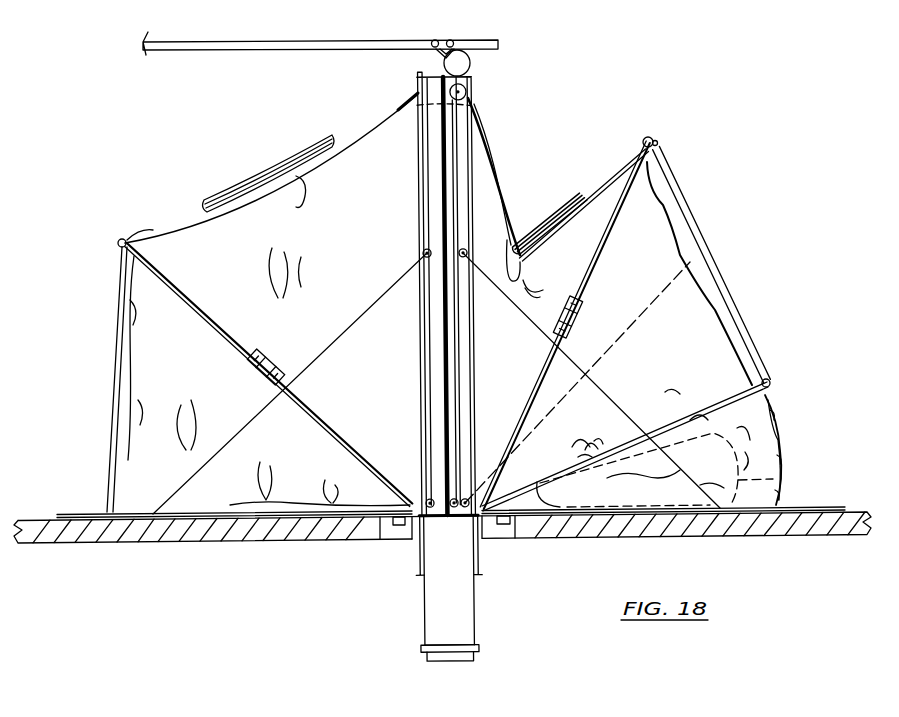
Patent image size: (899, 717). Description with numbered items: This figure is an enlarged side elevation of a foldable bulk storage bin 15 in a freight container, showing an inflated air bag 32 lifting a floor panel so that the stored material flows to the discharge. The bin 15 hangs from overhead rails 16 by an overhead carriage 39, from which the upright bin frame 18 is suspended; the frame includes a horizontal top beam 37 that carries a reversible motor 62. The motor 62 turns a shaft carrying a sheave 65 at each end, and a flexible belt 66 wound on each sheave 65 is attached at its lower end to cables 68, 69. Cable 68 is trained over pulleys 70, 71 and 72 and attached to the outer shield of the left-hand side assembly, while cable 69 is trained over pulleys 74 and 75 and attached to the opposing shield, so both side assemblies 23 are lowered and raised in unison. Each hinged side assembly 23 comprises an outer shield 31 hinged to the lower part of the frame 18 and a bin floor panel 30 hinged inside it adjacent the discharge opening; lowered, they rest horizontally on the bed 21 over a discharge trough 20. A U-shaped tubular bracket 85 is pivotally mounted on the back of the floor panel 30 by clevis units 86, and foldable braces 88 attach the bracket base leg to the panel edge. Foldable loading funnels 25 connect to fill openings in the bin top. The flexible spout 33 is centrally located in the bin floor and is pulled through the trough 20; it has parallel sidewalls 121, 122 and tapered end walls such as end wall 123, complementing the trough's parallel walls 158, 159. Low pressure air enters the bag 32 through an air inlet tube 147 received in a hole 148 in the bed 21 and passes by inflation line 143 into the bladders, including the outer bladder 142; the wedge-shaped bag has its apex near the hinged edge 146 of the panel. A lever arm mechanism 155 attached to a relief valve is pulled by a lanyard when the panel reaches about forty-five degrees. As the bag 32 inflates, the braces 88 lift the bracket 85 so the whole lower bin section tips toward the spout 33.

The foldable bulk storage bin 15 is at (700, 193).
The rails 16 is at (362, 41).
The upright bin frame 18 is at (486, 88).
The discharge trough 20 is at (480, 552).
The bed 21 is at (752, 540).
The hinged side assembly 23 is at (70, 512).
The foldable loading funnel 25 is at (272, 178).
The bin floor panel 30 is at (826, 507).
The outer shield 31 is at (710, 402).
The inflatable air bag 32 is at (788, 419).
The flexible spout 33 is at (488, 631).
The horizontal top beam 37 is at (420, 91).
The overhead carriage 39 is at (470, 33).
The reversible motor 62 is at (471, 63).
The sheave 65 is at (468, 96).
The flexible belt 66 is at (455, 185).
The cable 68 is at (388, 278).
The cable 69 is at (611, 393).
The pulley 70 is at (454, 508).
The pulley 71 is at (427, 497).
The pulley 72 is at (425, 248).
The pulley 74 is at (465, 500).
The pulley 75 is at (467, 250).
The U-shaped tubular bracket 85 is at (196, 294).
The clevis unit 86 is at (242, 343).
The foldable brace 88 is at (109, 351).
The spout sidewall 121 is at (421, 631).
The spout sidewall 122 is at (471, 614).
The tapered end wall 123 is at (444, 603).
The outer bladder 142 is at (782, 451).
The inflation line 143 is at (766, 478).
The hinged edge 146 is at (559, 449).
The air inlet tube 147 is at (398, 527).
The hole 148 is at (520, 524).
The lever arm mechanism 155 is at (478, 653).
The trough wall 158 is at (416, 566).
The trough wall 159 is at (478, 570).